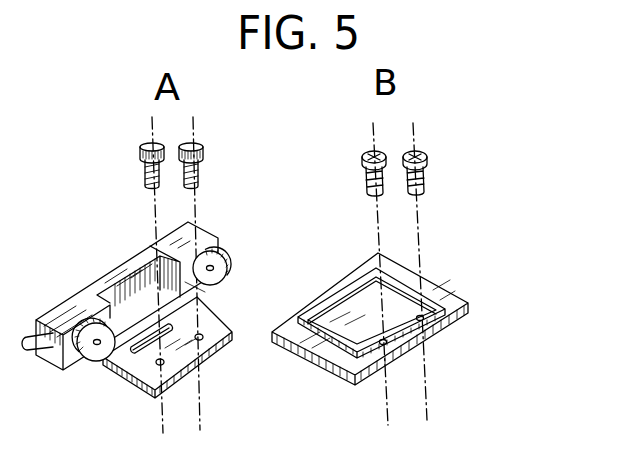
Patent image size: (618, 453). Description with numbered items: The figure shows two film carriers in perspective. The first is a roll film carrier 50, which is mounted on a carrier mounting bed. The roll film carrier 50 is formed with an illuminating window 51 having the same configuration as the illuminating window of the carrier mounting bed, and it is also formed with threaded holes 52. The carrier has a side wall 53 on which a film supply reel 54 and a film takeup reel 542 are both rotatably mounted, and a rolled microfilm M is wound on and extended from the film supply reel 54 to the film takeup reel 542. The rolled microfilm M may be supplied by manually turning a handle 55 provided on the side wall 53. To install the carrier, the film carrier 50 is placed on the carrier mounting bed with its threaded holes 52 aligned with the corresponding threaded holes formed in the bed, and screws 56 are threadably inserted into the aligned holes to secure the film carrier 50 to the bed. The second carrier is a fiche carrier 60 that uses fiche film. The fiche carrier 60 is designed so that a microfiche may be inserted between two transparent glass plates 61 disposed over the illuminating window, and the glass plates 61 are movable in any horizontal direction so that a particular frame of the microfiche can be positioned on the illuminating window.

In FIG. 5A, the roll film carrier 50 is at (197, 350).
In FIG. 5A, the illuminating window 51 is at (129, 353).
In FIG. 5A, the threaded holes 52 is at (208, 339).
In FIG. 5A, the side wall 53 is at (203, 233).
In FIG. 5A, the film supply reel 54 is at (222, 262).
In FIG. 5A, the film takeup reel 542 is at (92, 352).
In FIG. 5A, the handle 55 is at (34, 335).
In FIG. 5A, the screws 56 is at (197, 147).
In FIG. 5B, the screws 56 is at (394, 173).
In FIG. 5A, the rolled microfilm M is at (197, 288).
In FIG. 5B, the fiche carrier 60 is at (453, 300).
In FIG. 5B, the transparent glass plates 61 is at (390, 295).